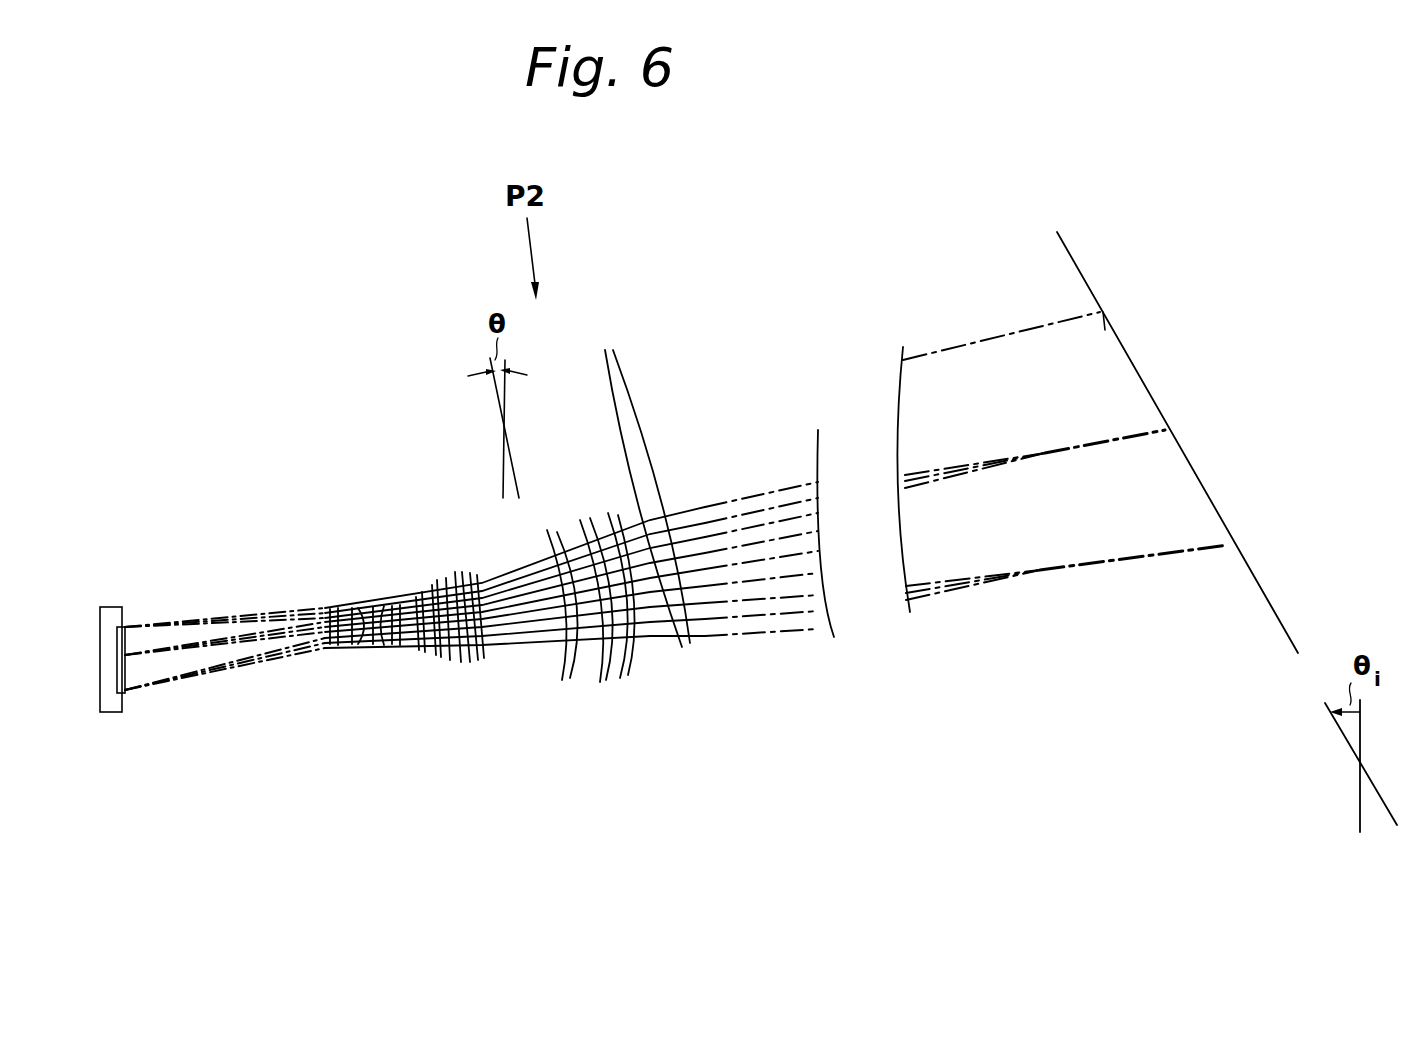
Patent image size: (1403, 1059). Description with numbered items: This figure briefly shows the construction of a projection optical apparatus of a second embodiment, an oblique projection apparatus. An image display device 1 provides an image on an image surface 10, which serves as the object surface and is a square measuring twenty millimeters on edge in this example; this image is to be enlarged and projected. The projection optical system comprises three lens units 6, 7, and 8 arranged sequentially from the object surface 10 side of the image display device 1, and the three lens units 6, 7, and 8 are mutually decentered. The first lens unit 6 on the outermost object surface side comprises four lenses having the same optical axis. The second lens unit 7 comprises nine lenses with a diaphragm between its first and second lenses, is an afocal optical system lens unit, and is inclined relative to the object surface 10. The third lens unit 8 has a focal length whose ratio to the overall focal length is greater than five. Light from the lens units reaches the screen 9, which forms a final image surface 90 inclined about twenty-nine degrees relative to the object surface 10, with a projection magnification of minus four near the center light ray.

The image display device 1 is at (110, 712).
The image surface 10 is at (127, 630).
The first lens unit 6 is at (400, 655).
The second lens unit 7 is at (638, 705).
The third lens unit 8 is at (699, 682).
The screen 9 is at (1063, 258).
The final image surface 90 is at (1100, 338).